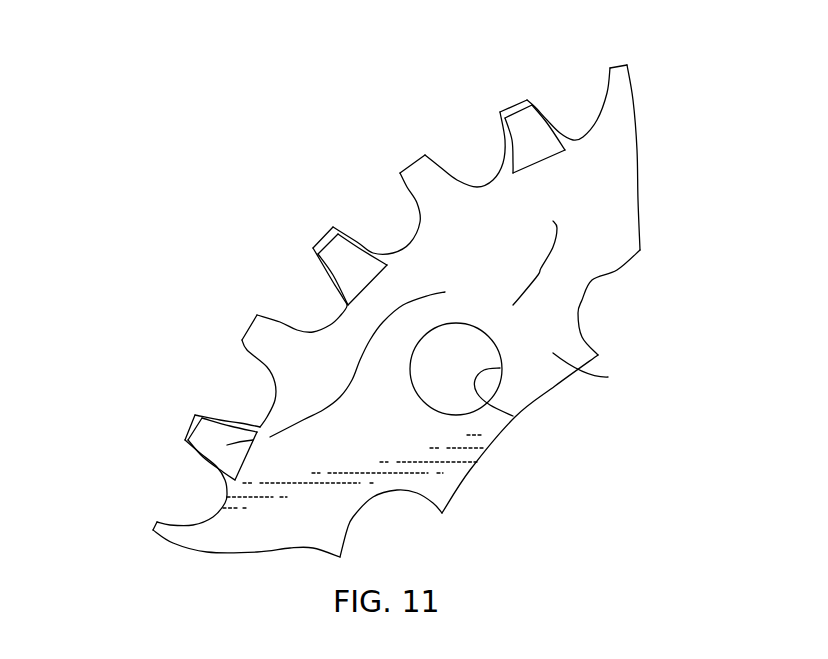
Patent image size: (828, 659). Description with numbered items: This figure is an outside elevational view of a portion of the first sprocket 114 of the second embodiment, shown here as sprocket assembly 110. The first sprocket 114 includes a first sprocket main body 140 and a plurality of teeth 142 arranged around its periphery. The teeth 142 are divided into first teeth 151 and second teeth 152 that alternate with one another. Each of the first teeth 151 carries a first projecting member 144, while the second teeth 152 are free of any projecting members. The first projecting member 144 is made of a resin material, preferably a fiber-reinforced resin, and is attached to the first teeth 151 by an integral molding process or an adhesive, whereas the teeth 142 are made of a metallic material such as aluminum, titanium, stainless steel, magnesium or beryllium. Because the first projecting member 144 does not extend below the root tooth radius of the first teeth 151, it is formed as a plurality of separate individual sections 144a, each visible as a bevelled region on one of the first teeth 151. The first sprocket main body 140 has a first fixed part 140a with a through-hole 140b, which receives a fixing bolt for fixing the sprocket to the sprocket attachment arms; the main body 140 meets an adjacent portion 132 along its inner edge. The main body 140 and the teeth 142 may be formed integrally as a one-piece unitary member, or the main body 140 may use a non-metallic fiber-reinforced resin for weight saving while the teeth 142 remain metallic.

The sprocket 110 is at (388, 310).
The first sprocket 114 is at (560, 124).
The flange portion 132 is at (545, 310).
The first sprocket main body 140 is at (583, 222).
The first fixed part 140a is at (603, 370).
The through-hole 140b is at (514, 417).
The teeth 142 is at (247, 315).
The first projecting member 144 is at (425, 290).
The separate individual sections 144a is at (445, 292).
The first teeth 151 is at (512, 105).
The second teeth 152 is at (408, 166).